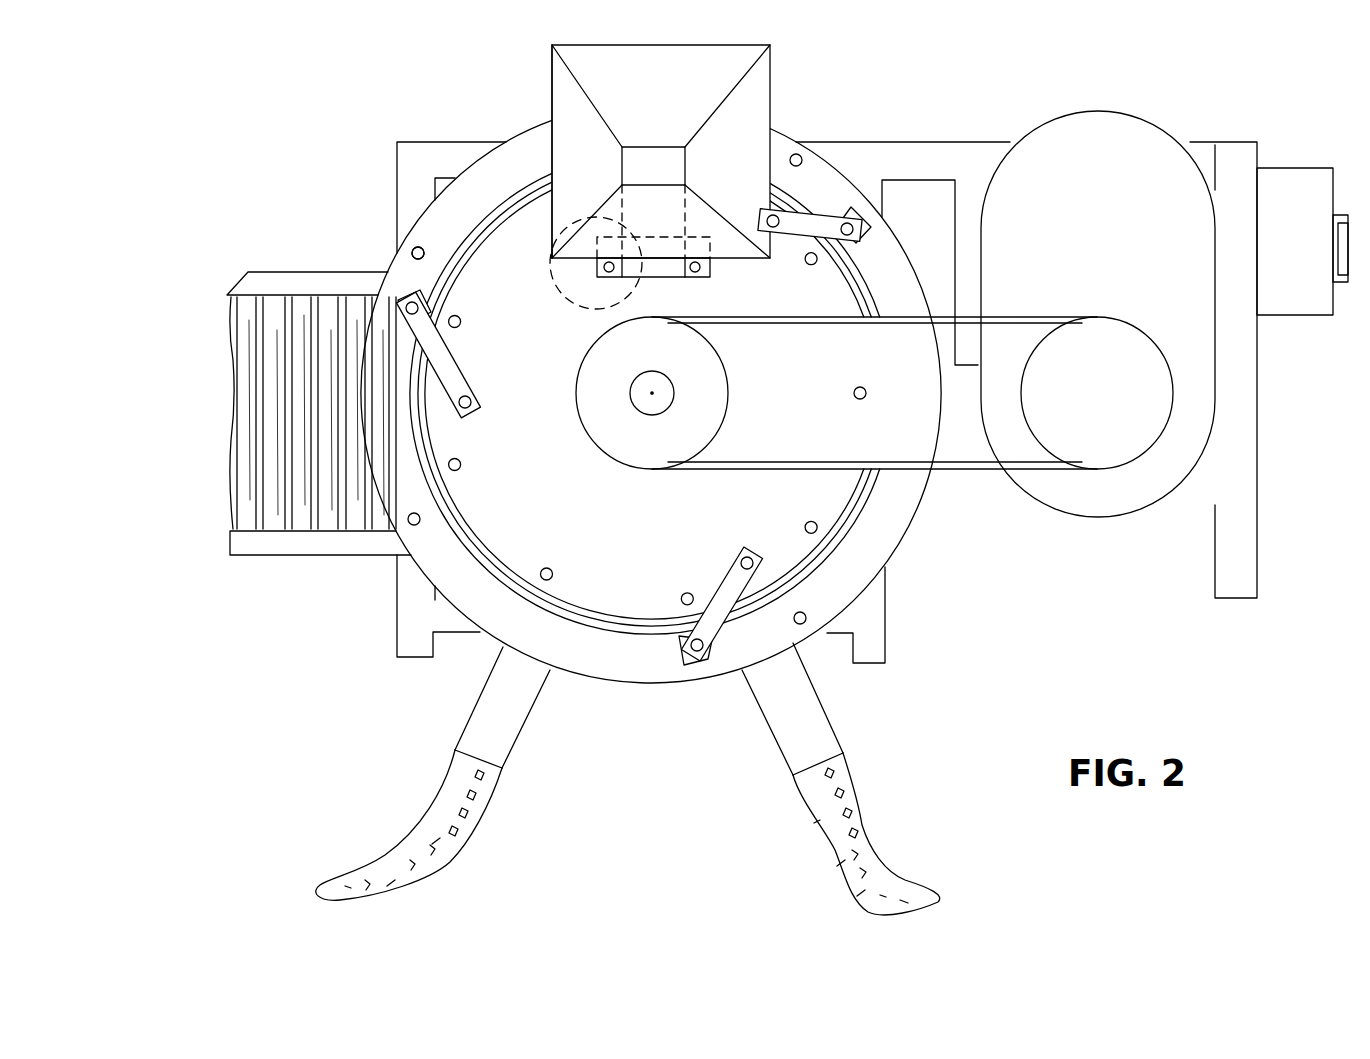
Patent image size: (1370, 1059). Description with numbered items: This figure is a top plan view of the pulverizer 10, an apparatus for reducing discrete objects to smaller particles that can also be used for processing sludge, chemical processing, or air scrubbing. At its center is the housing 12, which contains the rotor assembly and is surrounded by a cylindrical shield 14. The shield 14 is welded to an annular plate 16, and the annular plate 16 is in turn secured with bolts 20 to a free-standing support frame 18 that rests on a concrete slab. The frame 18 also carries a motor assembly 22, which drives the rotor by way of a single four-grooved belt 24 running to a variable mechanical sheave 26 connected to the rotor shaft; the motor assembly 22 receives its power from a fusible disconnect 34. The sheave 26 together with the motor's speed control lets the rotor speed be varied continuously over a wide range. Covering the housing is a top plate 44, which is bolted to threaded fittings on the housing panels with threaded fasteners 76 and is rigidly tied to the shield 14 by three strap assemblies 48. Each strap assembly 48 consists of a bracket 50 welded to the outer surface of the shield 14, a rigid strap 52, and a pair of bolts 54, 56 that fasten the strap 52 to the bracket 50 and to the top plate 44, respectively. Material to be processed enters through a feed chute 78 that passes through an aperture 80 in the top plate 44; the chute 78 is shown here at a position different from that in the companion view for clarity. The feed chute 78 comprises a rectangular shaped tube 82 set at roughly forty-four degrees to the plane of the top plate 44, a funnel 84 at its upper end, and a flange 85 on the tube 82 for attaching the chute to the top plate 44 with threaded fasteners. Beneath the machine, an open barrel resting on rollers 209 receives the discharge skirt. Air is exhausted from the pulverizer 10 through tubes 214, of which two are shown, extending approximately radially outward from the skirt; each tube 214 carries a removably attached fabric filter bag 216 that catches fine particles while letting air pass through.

The pulverizer 10 is at (660, 424).
The housing 12 is at (657, 504).
The cylindrical shield 14 is at (618, 630).
The annular plate 16 is at (906, 502).
The support frame 18 is at (395, 618).
The bolts 20 is at (411, 255).
The motor assembly 22 is at (1025, 130).
The belt 24 is at (787, 471).
The variable mechanical sheave 26 is at (607, 432).
The fusible disconnect 34 is at (1291, 317).
The top plate 44 is at (527, 558).
The strap assemblies 48 is at (625, 466).
The bracket 50 is at (430, 296).
The rigid strap 52 is at (456, 360).
The bolt 54 is at (408, 320).
The bolt 56 is at (466, 413).
The threaded fasteners 76 is at (462, 471).
The feed chute 78 is at (666, 143).
The aperture 80 is at (630, 289).
The rectangular shaped tube 82 is at (568, 268).
The funnel 84 is at (551, 75).
The flange 85 is at (700, 277).
The rollers 209 is at (292, 562).
The tubes 214 is at (470, 726).
The fabric filter bags 216 is at (462, 845).